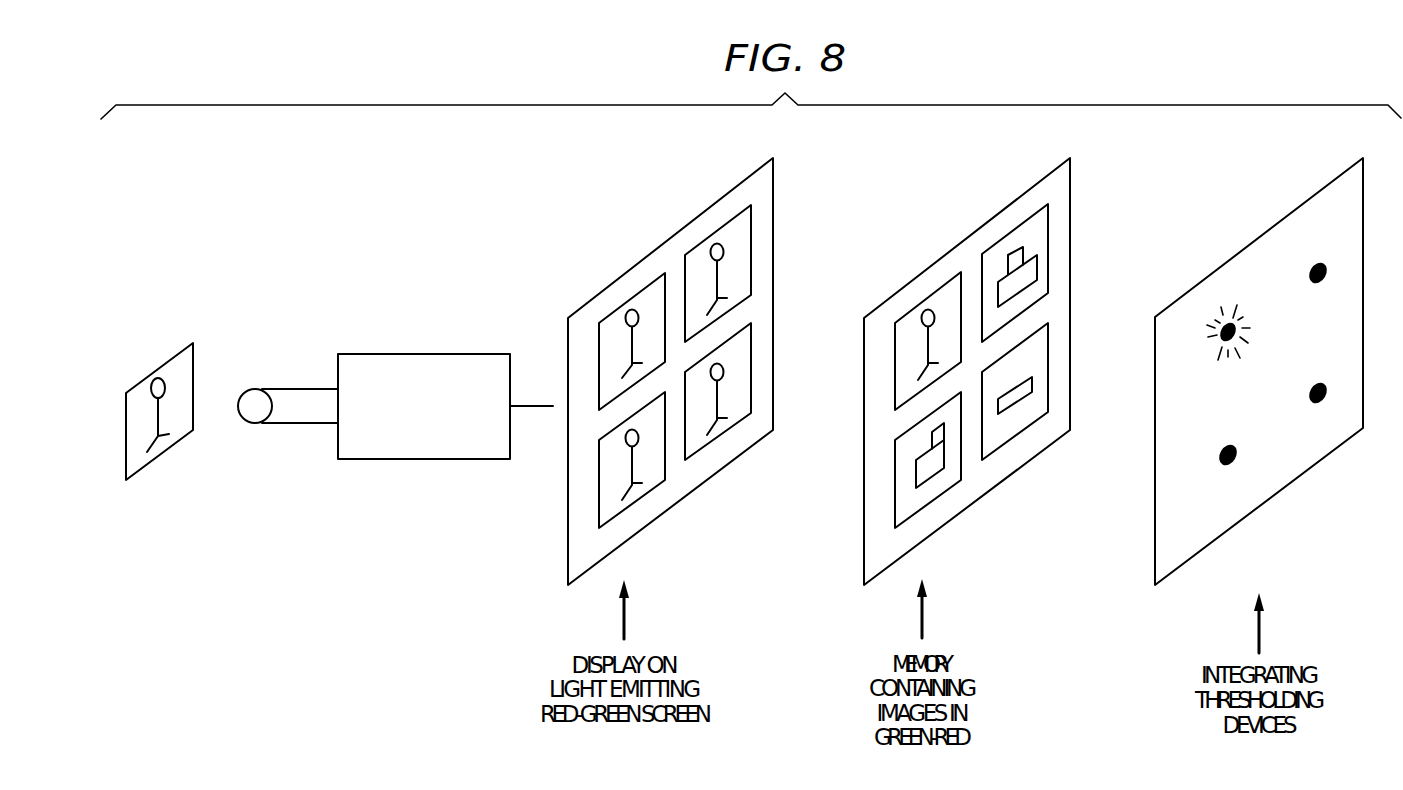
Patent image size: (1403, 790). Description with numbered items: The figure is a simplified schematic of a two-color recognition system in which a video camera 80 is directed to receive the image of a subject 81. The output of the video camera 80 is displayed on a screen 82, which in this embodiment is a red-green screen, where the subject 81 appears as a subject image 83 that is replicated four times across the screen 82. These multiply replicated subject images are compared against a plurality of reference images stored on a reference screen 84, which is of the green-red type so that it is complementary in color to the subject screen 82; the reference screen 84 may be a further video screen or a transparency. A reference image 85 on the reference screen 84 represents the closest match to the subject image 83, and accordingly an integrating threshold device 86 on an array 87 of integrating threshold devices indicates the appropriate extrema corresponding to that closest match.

The video camera 80 is at (360, 354).
The subject 81 is at (149, 373).
The screen 82 is at (670, 371).
The subject image 83 is at (640, 303).
The reference screen 84 is at (994, 371).
The reference image 85 is at (938, 303).
The integrating threshold device 86 is at (1220, 316).
The array 87 is at (1259, 371).